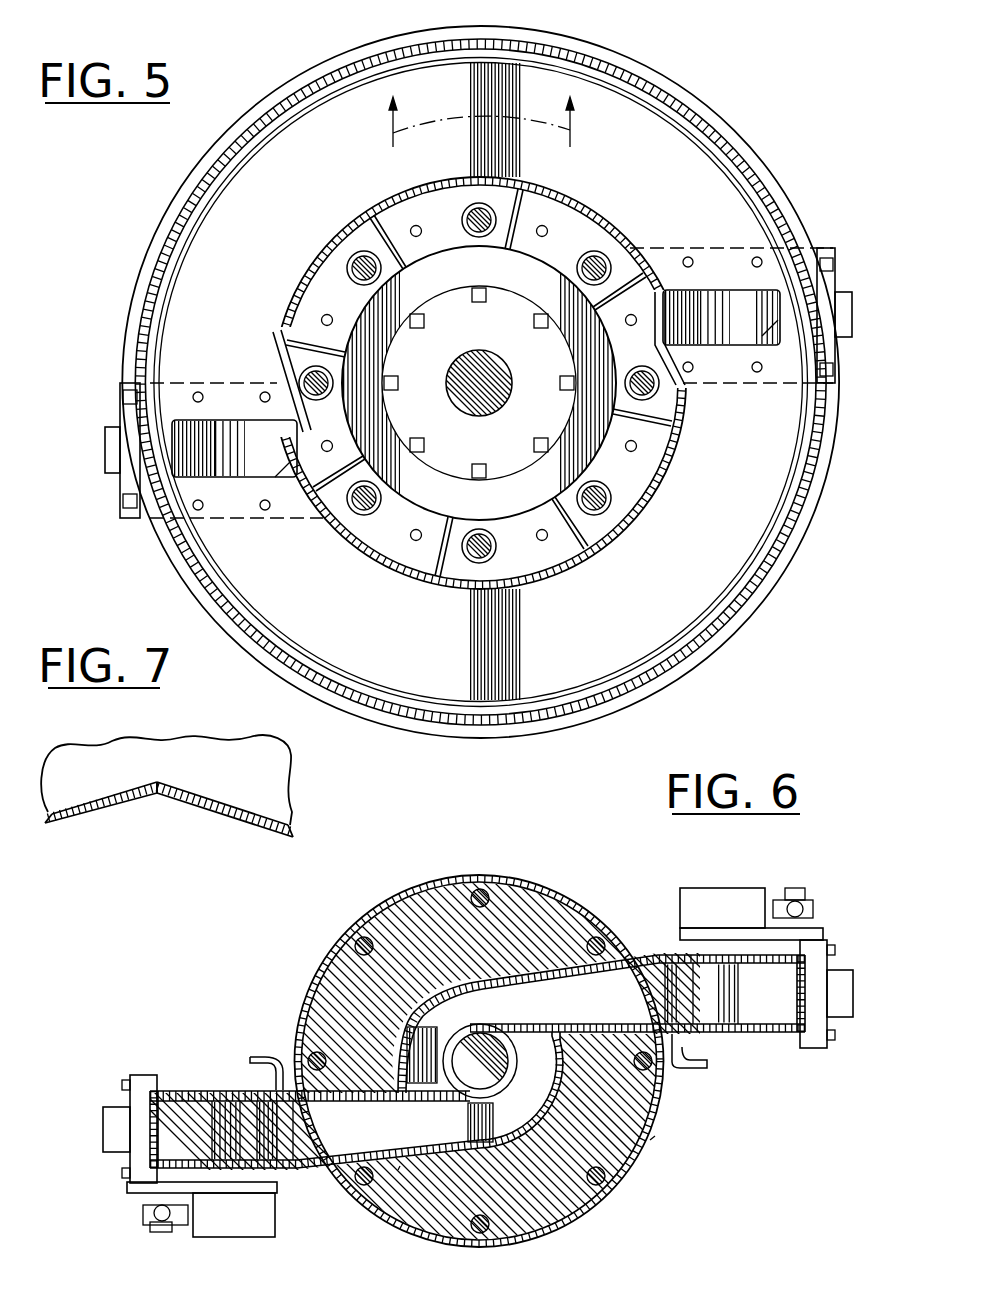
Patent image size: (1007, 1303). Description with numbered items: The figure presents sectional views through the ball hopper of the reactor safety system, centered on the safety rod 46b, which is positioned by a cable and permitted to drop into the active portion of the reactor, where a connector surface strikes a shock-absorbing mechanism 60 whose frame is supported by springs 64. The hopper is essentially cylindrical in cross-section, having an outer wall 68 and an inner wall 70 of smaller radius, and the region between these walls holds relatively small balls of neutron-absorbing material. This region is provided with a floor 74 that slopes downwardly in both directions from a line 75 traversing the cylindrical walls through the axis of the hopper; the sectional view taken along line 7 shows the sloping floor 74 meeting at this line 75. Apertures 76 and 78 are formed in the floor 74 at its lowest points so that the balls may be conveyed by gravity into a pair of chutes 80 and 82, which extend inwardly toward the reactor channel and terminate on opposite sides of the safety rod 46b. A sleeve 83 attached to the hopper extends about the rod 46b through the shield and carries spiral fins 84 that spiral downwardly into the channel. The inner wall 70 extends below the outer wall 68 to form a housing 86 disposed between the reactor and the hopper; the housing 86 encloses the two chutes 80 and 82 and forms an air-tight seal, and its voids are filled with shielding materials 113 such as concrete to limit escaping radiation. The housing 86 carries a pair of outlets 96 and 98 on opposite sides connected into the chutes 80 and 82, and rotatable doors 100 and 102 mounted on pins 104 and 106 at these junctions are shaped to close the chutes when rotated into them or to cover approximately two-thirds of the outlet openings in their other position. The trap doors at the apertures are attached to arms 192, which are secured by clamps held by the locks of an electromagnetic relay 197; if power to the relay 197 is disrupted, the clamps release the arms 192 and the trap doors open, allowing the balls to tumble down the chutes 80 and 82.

In FIG. 5, the section line 7— 7 is at (480, 125).
In FIG. 5, the safety rod 46b is at (495, 330).
In FIG. 6, the safety rod 46b is at (490, 1048).
In FIG. 5, the shock-absorbing mechanism 60 is at (333, 275).
In FIG. 5, the springs 64 is at (600, 256).
In FIG. 5, the outer wall 68 is at (130, 308).
In FIG. 7, the outer wall 68 is at (282, 795).
In FIG. 5, the inner wall 70 is at (378, 563).
In FIG. 5, the floor 74 is at (725, 208).
In FIG. 7, the floor 74 is at (203, 792).
In FIG. 5, the line 75 is at (470, 150).
In FIG. 7, the line 75 is at (160, 782).
In FIG. 5, the aperture 76 is at (700, 300).
In FIG. 5, the aperture 78 is at (205, 428).
In FIG. 5, the chute 80 is at (762, 336).
In FIG. 6, the chute 80 is at (572, 932).
In FIG. 5, the chute 82 is at (275, 477).
In FIG. 6, the chute 82 is at (398, 1170).
In FIG. 6, the sleeve 83 is at (455, 1035).
In FIG. 6, the spiral fins 84 is at (488, 1118).
In FIG. 6, the housing 86 is at (655, 1136).
In FIG. 5, the outlet 96 is at (842, 312).
In FIG. 6, the outlet 96 is at (856, 996).
In FIG. 5, the outlet 98 is at (110, 452).
In FIG. 6, the outlet 98 is at (110, 1137).
In FIG. 6, the rotatable door 100 is at (725, 1010).
In FIG. 6, the rotatable door 102 is at (242, 1112).
In FIG. 6, the pin 104 is at (700, 1070).
In FIG. 6, the pin 106 is at (270, 1057).
In FIG. 6, the shielding materials 113 is at (612, 1150).
In FIG. 6, the arms 192 is at (808, 906).
In FIG. 6, the electromagnetic relay 197 is at (716, 892).